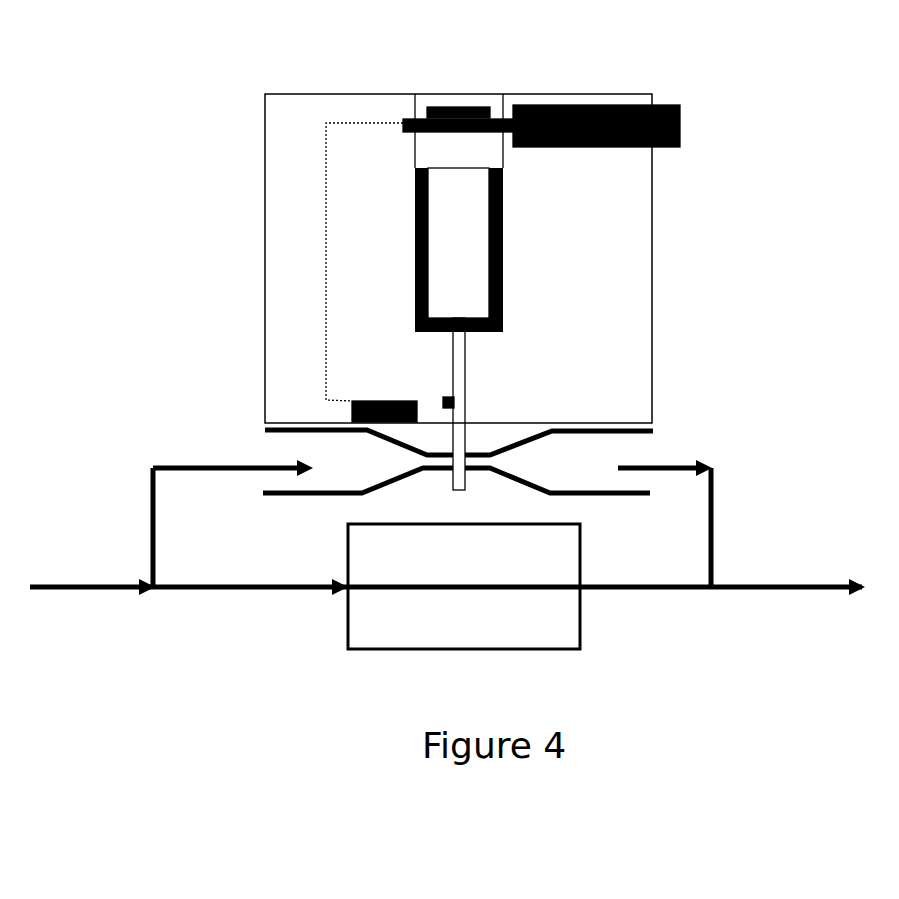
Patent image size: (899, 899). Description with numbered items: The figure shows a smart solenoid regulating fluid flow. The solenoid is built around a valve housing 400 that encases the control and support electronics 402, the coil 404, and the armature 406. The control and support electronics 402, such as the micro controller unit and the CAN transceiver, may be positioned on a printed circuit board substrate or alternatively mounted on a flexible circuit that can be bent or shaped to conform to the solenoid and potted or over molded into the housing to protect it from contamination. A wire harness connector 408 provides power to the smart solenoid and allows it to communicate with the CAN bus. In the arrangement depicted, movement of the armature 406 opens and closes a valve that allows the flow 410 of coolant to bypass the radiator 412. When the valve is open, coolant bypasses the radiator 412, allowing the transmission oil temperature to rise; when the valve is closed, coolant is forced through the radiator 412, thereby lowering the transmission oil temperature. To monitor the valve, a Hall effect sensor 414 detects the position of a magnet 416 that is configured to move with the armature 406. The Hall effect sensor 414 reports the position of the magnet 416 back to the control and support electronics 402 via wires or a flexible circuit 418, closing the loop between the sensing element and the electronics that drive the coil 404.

The valve housing 400 is at (257, 175).
The control and support electronics 402 is at (440, 97).
The coil 404 is at (507, 215).
The armature 406 is at (460, 280).
The wire harness connector 408 is at (690, 125).
The flow 410 is at (233, 459).
The radiator 412 is at (588, 618).
The Hall effect sensor 414 is at (345, 408).
The magnet 416 is at (437, 398).
The flexible circuit 418 is at (312, 318).